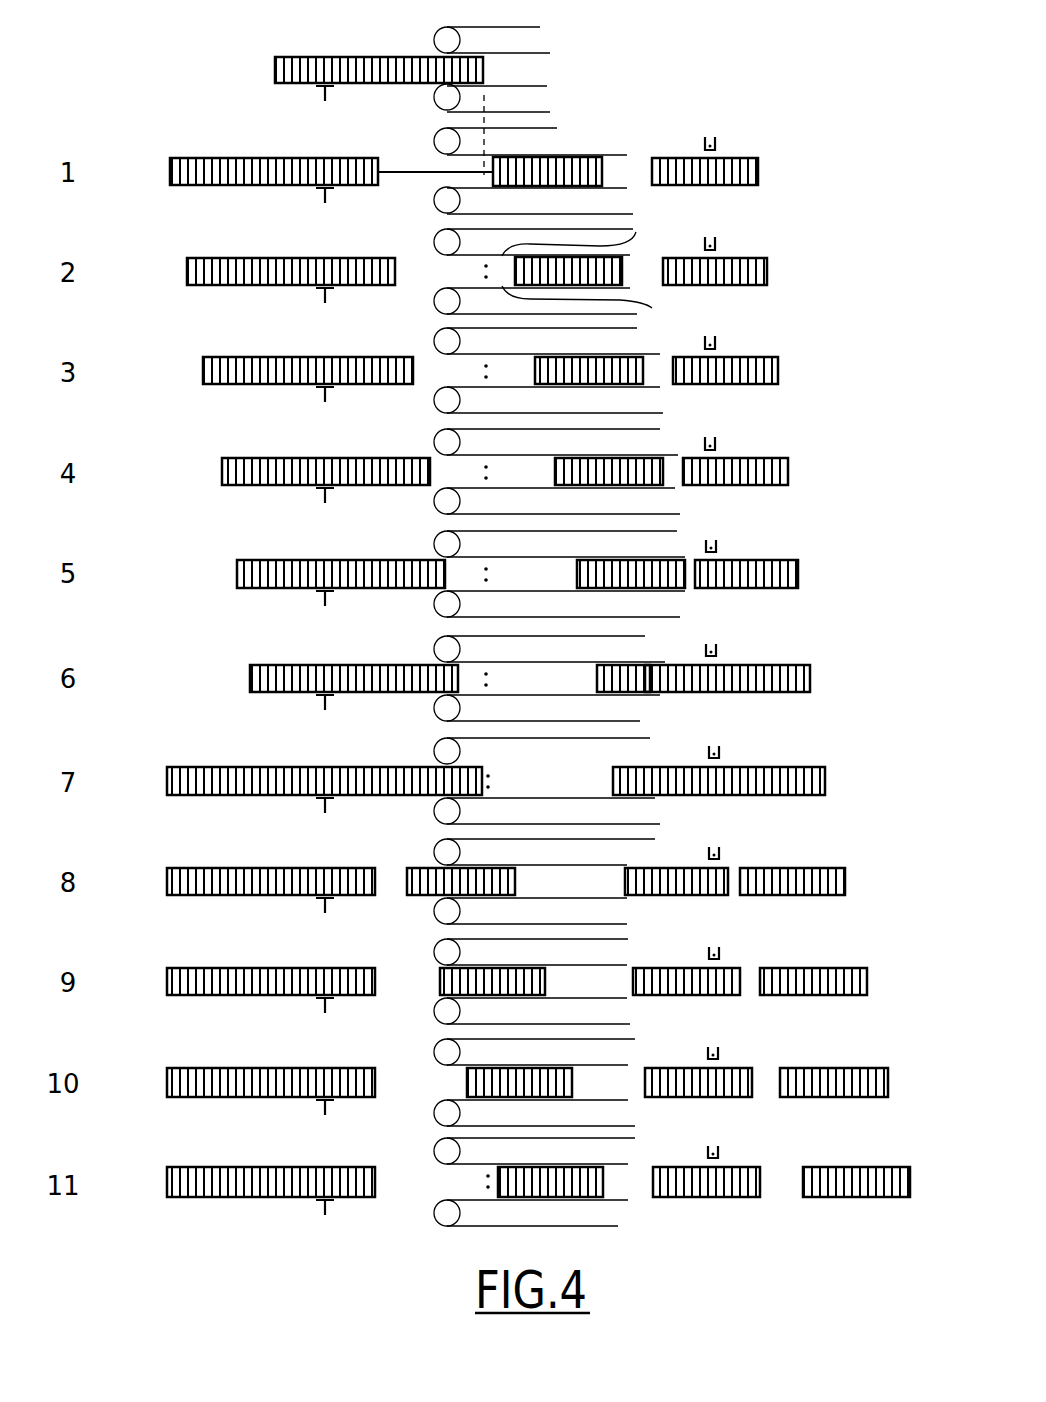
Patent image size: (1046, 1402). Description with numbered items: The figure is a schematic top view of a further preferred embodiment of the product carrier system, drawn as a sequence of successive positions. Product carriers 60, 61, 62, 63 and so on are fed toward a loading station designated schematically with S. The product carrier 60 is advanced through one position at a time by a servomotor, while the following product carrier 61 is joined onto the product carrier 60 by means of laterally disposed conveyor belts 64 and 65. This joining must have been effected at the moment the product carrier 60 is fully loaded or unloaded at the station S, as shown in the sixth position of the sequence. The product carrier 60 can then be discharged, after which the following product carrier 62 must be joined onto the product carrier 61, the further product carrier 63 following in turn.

The product carrier 60 is at (742, 158).
The following product carrier 61 is at (418, 57).
The following product carrier 62 is at (313, 54).
The product carrier 63 is at (242, 157).
The laterally disposed conveyor belt 64 is at (584, 233).
The laterally disposed conveyor belt 65 is at (592, 302).
The loading station S is at (708, 132).